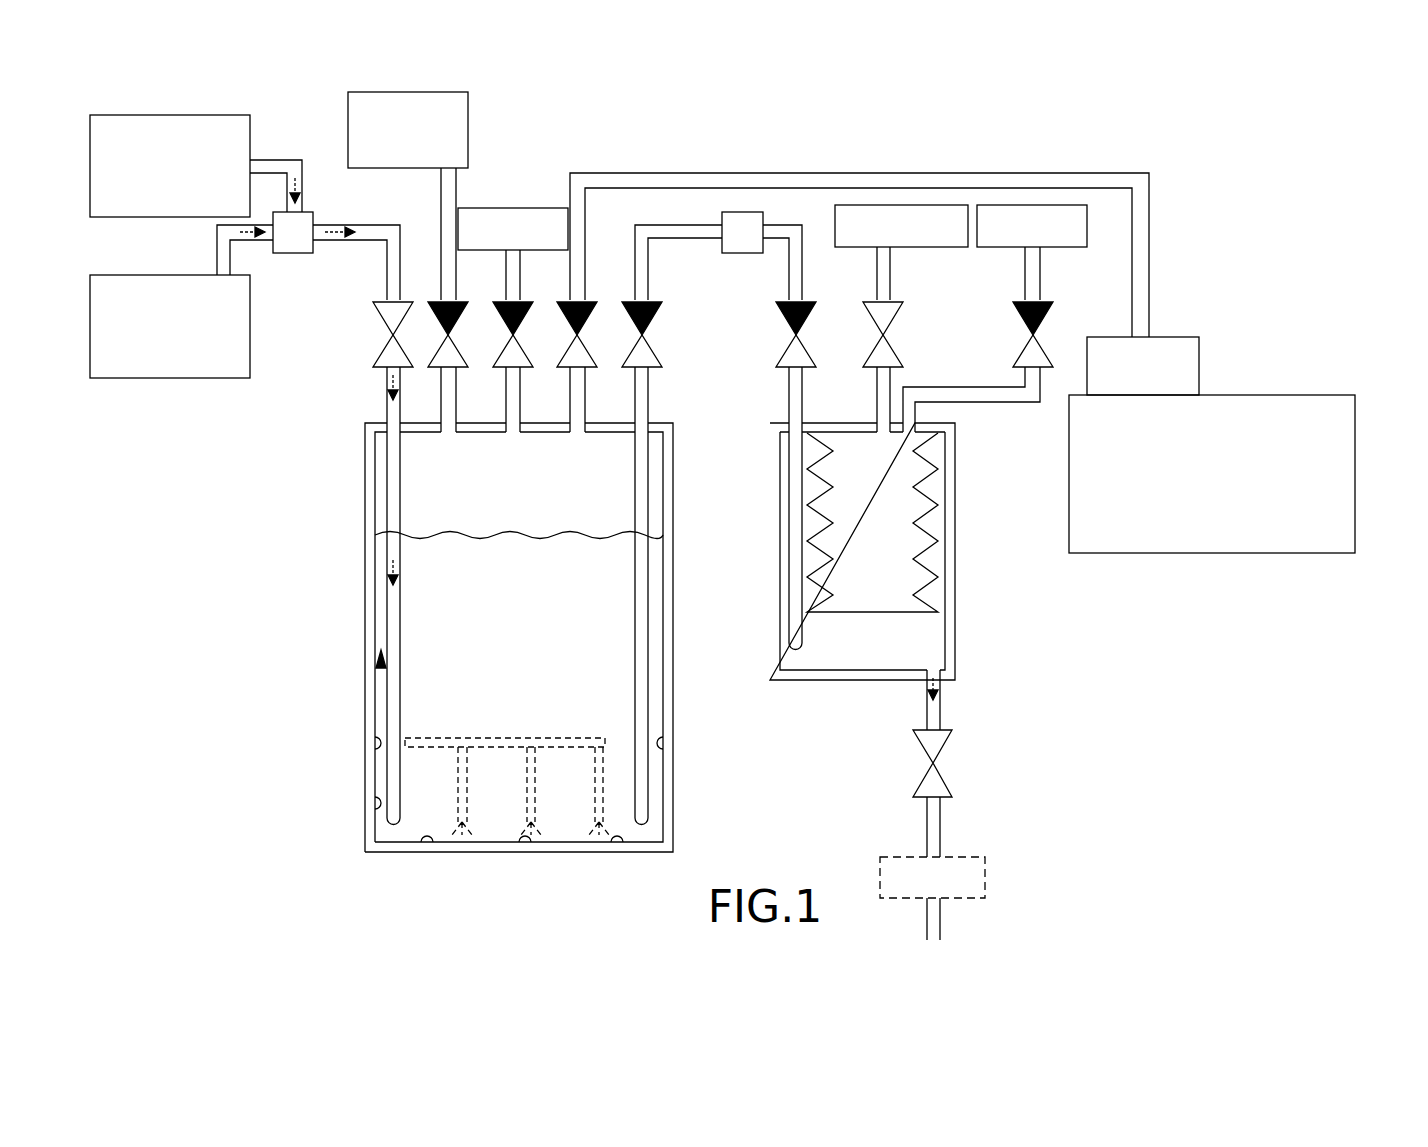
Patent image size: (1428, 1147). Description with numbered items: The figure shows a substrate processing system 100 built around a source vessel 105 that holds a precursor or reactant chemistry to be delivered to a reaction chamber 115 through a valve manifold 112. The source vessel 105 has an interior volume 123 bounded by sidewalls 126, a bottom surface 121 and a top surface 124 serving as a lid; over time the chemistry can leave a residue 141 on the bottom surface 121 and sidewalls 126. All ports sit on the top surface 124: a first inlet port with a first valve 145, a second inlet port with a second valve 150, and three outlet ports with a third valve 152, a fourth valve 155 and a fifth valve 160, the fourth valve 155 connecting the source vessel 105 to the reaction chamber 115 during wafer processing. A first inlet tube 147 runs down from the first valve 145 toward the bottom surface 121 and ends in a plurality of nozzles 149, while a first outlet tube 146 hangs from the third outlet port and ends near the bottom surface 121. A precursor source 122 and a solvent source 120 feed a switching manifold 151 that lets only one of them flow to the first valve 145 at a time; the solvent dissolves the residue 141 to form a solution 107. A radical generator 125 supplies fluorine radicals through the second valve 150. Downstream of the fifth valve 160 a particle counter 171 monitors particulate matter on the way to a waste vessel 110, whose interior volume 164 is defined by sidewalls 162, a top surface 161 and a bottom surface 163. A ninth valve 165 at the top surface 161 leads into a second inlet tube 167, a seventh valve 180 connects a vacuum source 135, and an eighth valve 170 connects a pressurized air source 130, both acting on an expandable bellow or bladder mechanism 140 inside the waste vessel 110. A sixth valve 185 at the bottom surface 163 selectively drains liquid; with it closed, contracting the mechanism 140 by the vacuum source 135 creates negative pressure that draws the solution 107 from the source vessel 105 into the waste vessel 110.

The system 100 is at (1338, 155).
The source vessel 105 is at (372, 578).
The solution 107 is at (519, 557).
The waste vessel 110 is at (956, 562).
The valve manifold 112 is at (1199, 345).
The reaction chamber 115 is at (1355, 415).
The solvent source 120 is at (190, 378).
The bottom surface 121 is at (652, 828).
The precursor source 122 is at (215, 115).
The interior volume 123 is at (420, 457).
The top surface 124 is at (672, 420).
The radical generator 125 is at (468, 130).
The sidewalls 126 is at (380, 672).
The pressurized air source 130 is at (905, 205).
The vacuum source 135 is at (505, 208).
The mechanism 140 is at (935, 460).
The residue 141 is at (378, 745).
The first valve 145 is at (373, 355).
The first outlet tube 146 is at (648, 485).
The first inlet tube 147 is at (395, 475).
The plurality of nozzles 149 is at (530, 740).
The second valve 150 is at (457, 300).
The switching manifold 151 is at (293, 253).
The third valve 152 is at (520, 300).
The fourth valve 155 is at (565, 358).
The fifth valve 160 is at (655, 352).
The top surface 161 is at (820, 425).
The sidewalls 162 is at (948, 512).
The bottom surface 163 is at (935, 655).
The interior volume 164 is at (840, 655).
The ninth valve 165 is at (780, 320).
The second inlet tube 167 is at (795, 490).
The eighth valve 170 is at (868, 352).
The particle counter 171 is at (722, 218).
The seventh valve 180 is at (1022, 350).
The sixth valve 185 is at (950, 750).